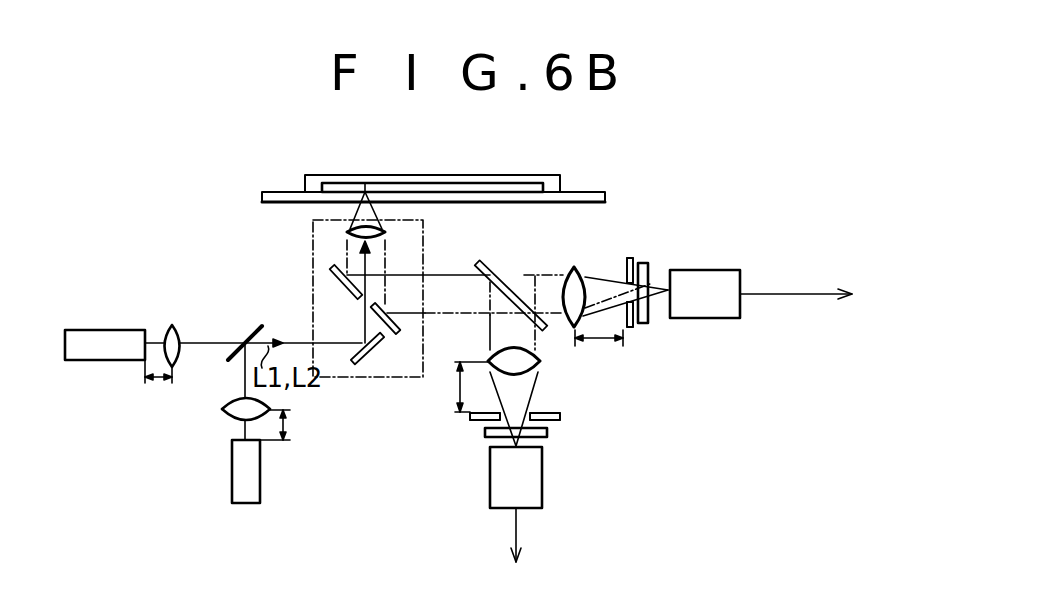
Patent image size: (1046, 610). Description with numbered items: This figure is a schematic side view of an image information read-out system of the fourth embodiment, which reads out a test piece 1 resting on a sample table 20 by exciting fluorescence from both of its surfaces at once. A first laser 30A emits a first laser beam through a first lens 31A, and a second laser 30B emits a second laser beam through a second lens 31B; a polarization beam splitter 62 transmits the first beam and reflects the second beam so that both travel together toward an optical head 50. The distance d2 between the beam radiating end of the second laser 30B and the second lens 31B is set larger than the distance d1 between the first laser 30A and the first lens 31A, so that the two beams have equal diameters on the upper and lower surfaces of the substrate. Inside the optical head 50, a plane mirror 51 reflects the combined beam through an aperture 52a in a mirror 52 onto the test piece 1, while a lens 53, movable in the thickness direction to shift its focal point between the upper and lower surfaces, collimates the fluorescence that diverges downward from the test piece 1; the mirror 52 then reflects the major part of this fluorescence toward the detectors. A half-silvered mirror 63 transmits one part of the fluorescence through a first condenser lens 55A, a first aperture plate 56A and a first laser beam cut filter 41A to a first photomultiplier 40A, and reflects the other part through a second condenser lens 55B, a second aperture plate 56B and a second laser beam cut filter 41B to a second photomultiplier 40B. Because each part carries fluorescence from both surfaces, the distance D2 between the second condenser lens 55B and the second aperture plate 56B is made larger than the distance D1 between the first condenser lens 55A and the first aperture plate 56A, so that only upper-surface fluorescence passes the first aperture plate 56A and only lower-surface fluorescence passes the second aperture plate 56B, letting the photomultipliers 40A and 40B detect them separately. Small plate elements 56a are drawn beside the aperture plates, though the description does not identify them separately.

The test piece 1 is at (508, 178).
The sample table 20 is at (601, 192).
The first laser 30A is at (108, 330).
The second laser 30B is at (232, 470).
The first lens 31A is at (174, 326).
The second lens 31B is at (225, 410).
The first photomultiplier 40A is at (738, 271).
The second photomultiplier 40B is at (543, 492).
The first laser beam cut filter 41A is at (646, 323).
The second laser beam cut filter 41B is at (547, 433).
The optical head 50 is at (313, 263).
The plane mirror 51 is at (361, 363).
The mirror 52 is at (333, 268).
The aperture 52a is at (373, 310).
The lens 53 is at (386, 233).
The first condenser lens 55A is at (570, 267).
The second condenser lens 55B is at (541, 362).
The first aperture plate 56A is at (633, 327).
The second aperture plate 56B is at (560, 417).
The aperture plate 56a is at (626, 283).
The polarization beam splitter 62 is at (244, 339).
The half-silvered mirror 63 is at (482, 265).
The distance between first laser and first lens d1 is at (164, 379).
The distance between second laser and second lens d2 is at (290, 425).
The distance between first condenser lens and first aperture plate D1 is at (599, 329).
The distance between second condenser lens and second aperture plate D2 is at (457, 387).